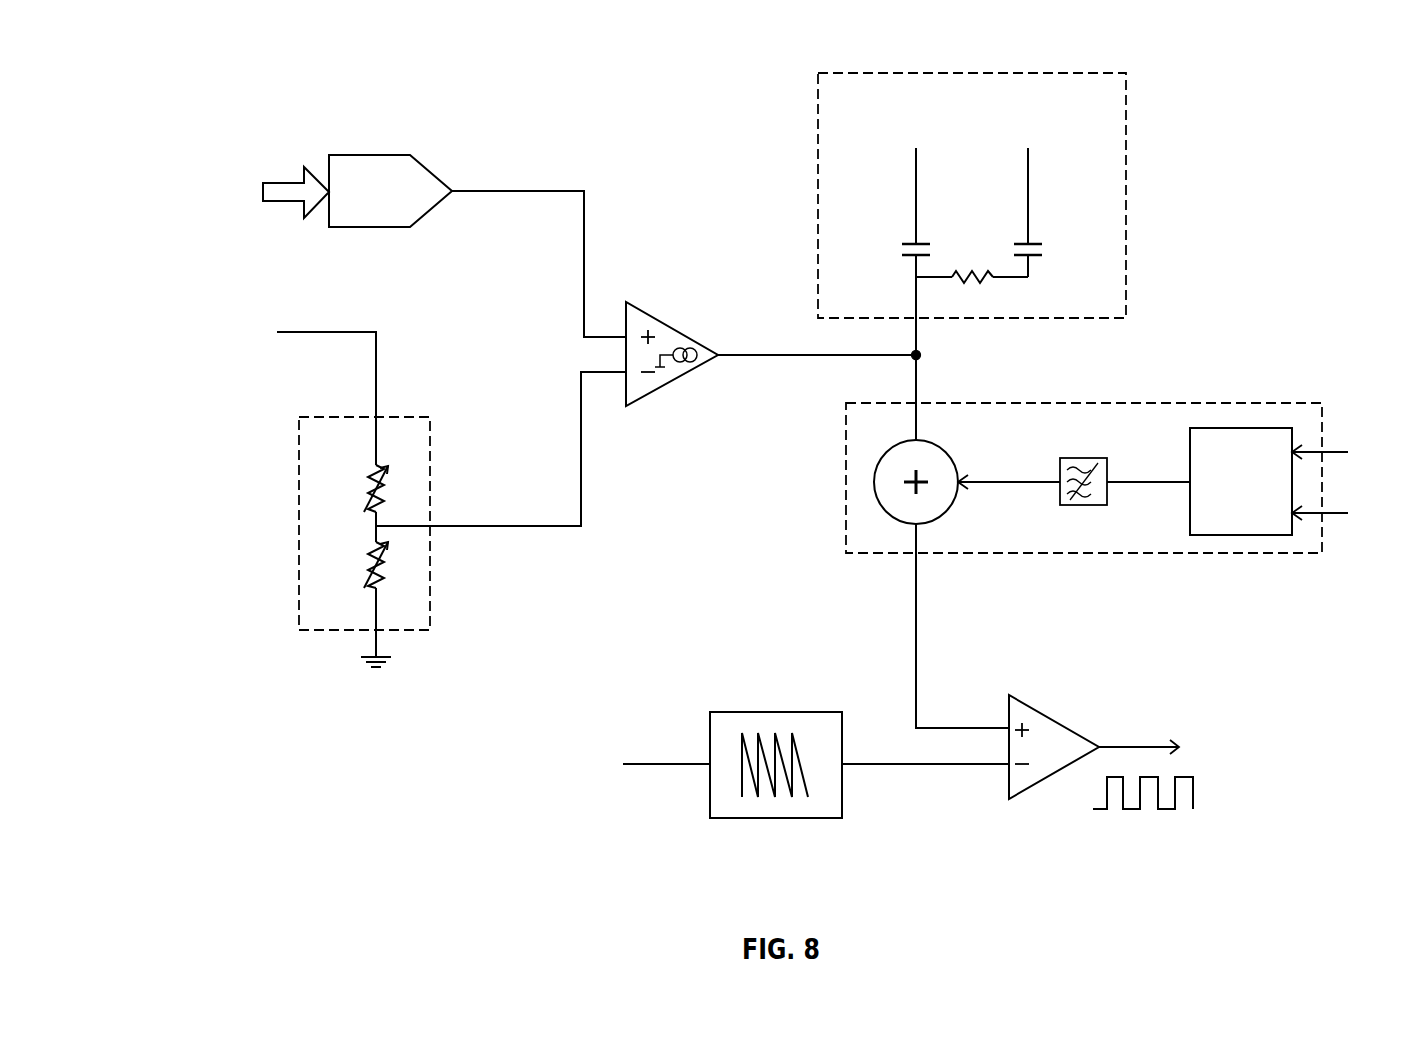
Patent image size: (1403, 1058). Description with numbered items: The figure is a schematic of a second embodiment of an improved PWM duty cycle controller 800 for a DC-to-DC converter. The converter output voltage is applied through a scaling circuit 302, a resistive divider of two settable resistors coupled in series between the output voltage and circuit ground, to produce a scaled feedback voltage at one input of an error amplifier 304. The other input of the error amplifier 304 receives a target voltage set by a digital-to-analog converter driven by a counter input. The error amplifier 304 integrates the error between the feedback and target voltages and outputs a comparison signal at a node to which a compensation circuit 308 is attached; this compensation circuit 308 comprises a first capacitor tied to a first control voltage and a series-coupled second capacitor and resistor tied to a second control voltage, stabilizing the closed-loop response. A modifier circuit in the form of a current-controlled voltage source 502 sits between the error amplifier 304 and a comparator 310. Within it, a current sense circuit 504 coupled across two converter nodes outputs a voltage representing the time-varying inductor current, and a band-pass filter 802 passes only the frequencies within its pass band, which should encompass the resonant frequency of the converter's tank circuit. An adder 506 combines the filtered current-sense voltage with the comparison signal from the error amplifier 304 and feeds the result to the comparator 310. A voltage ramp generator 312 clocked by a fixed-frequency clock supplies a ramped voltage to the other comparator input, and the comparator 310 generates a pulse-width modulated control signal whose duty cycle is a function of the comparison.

The improved PWM duty cycle controller 800 is at (189, 64).
The scaling circuit 302 is at (299, 592).
The error amplifier 304 is at (678, 328).
The compensation circuit 308 is at (818, 92).
The comparator 310 is at (1050, 776).
The voltage ramp generator 312 is at (710, 818).
The current-controlled voltage source 502 is at (846, 520).
The current sense circuit 504 is at (1190, 440).
The adder 506 is at (947, 450).
The band-pass filter 802 is at (1077, 505).